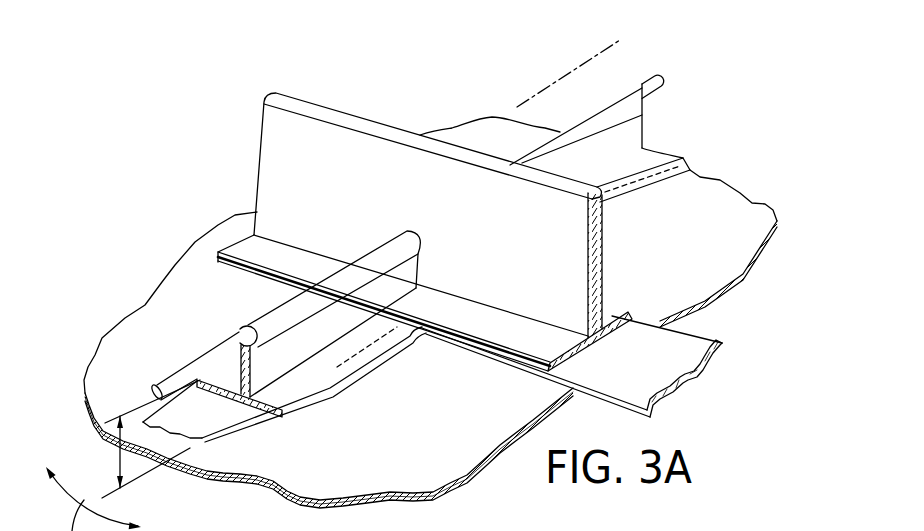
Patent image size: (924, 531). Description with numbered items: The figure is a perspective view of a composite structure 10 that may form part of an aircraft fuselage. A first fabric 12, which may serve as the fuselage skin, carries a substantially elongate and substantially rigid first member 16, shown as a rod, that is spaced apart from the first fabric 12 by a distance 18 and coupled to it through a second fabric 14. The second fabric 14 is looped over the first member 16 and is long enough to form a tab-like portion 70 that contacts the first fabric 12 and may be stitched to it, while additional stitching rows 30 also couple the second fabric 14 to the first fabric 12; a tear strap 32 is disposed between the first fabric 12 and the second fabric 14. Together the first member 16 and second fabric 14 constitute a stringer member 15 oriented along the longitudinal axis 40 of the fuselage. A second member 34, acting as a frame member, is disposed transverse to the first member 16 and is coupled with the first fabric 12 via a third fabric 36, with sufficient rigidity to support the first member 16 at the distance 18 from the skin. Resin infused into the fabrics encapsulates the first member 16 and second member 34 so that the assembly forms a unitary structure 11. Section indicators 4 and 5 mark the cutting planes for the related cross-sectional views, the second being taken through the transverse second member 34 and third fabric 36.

The composite structure 10 is at (168, 203).
The unitary structure 11 is at (713, 67).
The first fabric 12 is at (728, 222).
The second fabric 14 is at (623, 140).
The stringer member 15 is at (643, 116).
The first member 16 is at (658, 86).
The distance 18 is at (117, 462).
The stitching rows 30 is at (223, 375).
The tear strap 32 is at (247, 430).
The second member 34 is at (272, 157).
The third fabric 36 is at (602, 280).
The longitudinal axis 40 is at (567, 73).
The tab-like portion 70 is at (268, 396).
The section line 4- 4 is at (153, 295).
The section line 5- 5 is at (645, 265).